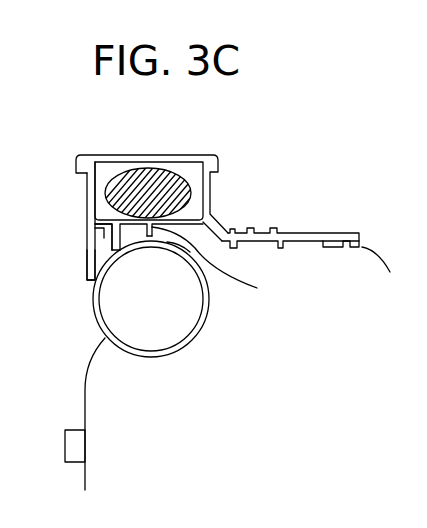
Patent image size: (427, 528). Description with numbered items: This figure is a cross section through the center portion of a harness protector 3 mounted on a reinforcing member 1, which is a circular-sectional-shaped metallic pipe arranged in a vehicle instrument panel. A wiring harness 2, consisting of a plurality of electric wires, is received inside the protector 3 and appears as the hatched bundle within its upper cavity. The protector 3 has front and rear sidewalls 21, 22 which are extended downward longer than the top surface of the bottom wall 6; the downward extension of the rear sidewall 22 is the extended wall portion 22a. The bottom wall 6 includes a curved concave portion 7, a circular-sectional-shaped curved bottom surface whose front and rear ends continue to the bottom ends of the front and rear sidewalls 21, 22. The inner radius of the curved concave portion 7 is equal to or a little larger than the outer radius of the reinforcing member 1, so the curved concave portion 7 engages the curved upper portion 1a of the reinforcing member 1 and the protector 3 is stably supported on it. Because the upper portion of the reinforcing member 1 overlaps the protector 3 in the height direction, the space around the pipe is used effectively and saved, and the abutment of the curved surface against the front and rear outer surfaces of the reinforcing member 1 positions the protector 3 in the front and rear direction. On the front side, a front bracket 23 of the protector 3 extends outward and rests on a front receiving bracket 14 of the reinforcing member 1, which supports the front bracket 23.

The reinforcing member 1 is at (205, 322).
The curved upper portion 1a is at (320, 248).
The wiring harness 2 is at (151, 178).
The harness protector 3 is at (207, 150).
The bottom wall 6 is at (106, 234).
The curved concave portion 7 is at (152, 246).
The front receiving bracket 14 is at (306, 249).
The front sidewall 21 is at (212, 192).
The rear sidewall 22 is at (87, 200).
The extended wall portion 22a is at (92, 256).
The front bracket 23 is at (305, 234).